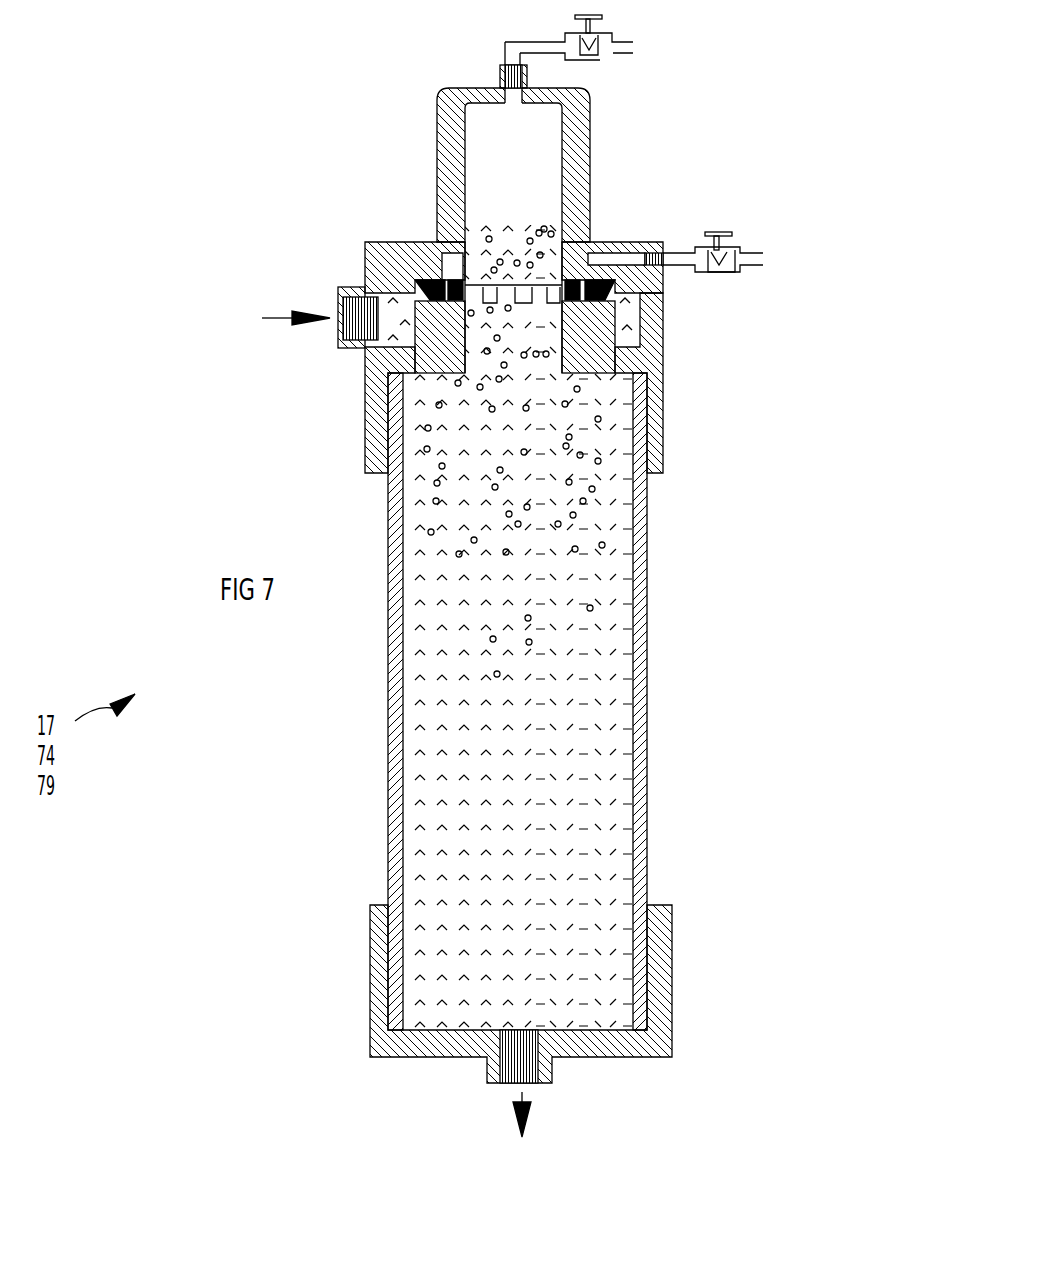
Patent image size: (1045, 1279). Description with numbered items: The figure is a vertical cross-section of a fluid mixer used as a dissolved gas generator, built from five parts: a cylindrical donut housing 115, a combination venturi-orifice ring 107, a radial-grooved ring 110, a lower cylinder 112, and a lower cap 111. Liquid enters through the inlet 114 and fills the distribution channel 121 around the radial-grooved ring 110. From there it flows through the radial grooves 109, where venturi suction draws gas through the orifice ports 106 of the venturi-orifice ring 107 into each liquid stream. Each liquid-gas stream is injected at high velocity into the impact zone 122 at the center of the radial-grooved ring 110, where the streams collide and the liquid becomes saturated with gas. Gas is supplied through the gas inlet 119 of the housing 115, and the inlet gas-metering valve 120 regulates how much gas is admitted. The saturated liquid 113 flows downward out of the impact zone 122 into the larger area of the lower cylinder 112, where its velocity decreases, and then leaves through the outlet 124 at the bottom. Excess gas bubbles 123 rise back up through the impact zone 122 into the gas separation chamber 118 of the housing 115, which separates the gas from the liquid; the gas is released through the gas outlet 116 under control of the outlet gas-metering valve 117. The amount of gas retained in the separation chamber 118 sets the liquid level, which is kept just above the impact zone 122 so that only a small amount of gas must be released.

The orifice ports 106 is at (573, 283).
The combination venturi-orifice ring 107 is at (417, 280).
The radial grooves 109 is at (363, 282).
The radial-grooved ring 110 is at (348, 348).
The lower cap 111 is at (372, 962).
The lower cylinder 112 is at (393, 785).
The saturated liquid 113 is at (405, 518).
The inlet 114 is at (340, 330).
The cylindrical donut housing 115 is at (420, 242).
The gas outlet 116 is at (500, 63).
The outlet gas-metering valve 117 is at (612, 62).
The gas separation chamber 118 is at (533, 145).
The gas inlet 119 is at (664, 255).
The inlet gas-metering valve 120 is at (742, 273).
The distribution channel 121 is at (640, 312).
The impact zone 122 is at (510, 302).
The excess gas bubbles 123 is at (575, 510).
The outlet 124 is at (533, 1085).